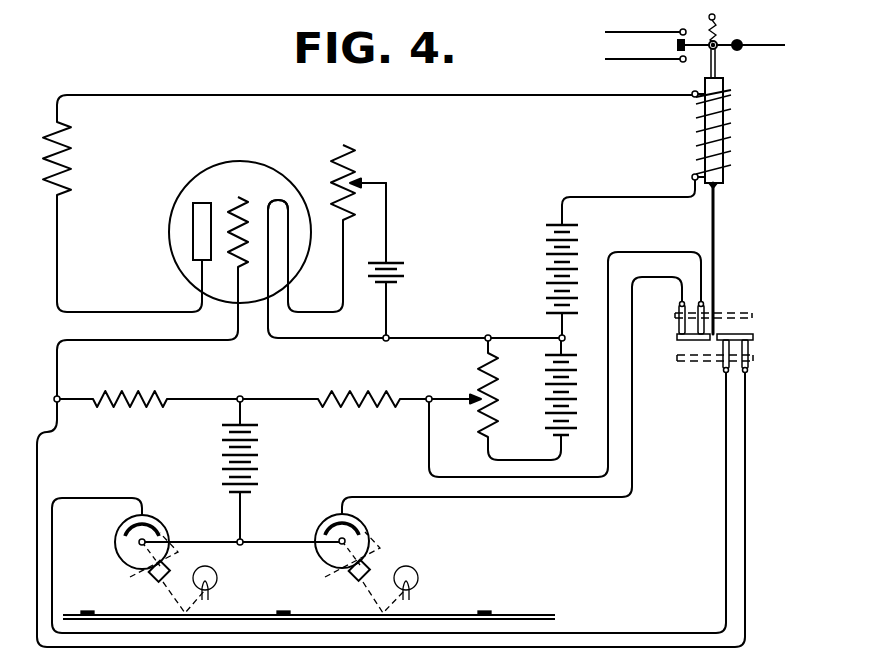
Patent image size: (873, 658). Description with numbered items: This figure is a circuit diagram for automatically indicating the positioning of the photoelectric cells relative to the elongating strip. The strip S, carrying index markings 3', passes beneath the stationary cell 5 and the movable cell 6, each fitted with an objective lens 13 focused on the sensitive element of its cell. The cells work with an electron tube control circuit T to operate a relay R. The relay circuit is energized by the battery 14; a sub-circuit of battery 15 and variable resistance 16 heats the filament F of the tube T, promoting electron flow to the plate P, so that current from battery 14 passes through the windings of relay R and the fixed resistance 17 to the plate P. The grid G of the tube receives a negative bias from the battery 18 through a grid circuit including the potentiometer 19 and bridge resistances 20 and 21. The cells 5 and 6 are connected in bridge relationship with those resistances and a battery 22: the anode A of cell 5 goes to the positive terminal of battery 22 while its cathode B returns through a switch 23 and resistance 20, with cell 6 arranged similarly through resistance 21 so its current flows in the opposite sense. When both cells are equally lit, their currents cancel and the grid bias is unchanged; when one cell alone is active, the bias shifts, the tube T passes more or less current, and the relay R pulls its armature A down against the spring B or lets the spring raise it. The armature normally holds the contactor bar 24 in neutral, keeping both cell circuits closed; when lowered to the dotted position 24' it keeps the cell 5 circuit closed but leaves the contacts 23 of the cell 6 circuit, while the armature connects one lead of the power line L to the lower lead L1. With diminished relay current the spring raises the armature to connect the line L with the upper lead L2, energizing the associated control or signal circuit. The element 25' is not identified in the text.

The fixed resistance 17 is at (62, 160).
The variable resistance 16 is at (357, 168).
The battery 15 is at (398, 268).
The battery 14 is at (553, 275).
The battery 18 is at (556, 417).
The potentiometer 19 is at (493, 402).
The bridge resistance 20 is at (133, 398).
The bridge resistance 21 is at (353, 398).
The battery 22 is at (258, 462).
The switch 23 is at (682, 343).
The contactor bar 24 is at (735, 327).
The dotted line position of contactor bar 24' is at (737, 364).
The insulating block 25' is at (724, 298).
The stationary cell 5 is at (118, 534).
The movable cell 6 is at (364, 531).
The objective lens 13 is at (162, 583).
The index marking 3' is at (286, 595).
The strip S is at (517, 612).
The electron tube control circuit / vacuum tube T is at (170, 222).
The plate P is at (204, 206).
The grid G is at (239, 202).
The filament F is at (278, 208).
The armature / anode A is at (720, 107).
The relay R is at (728, 150).
The spring / cathode B is at (722, 38).
The power line L is at (762, 48).
The lead L1 is at (605, 59).
The lead L2 is at (605, 32).